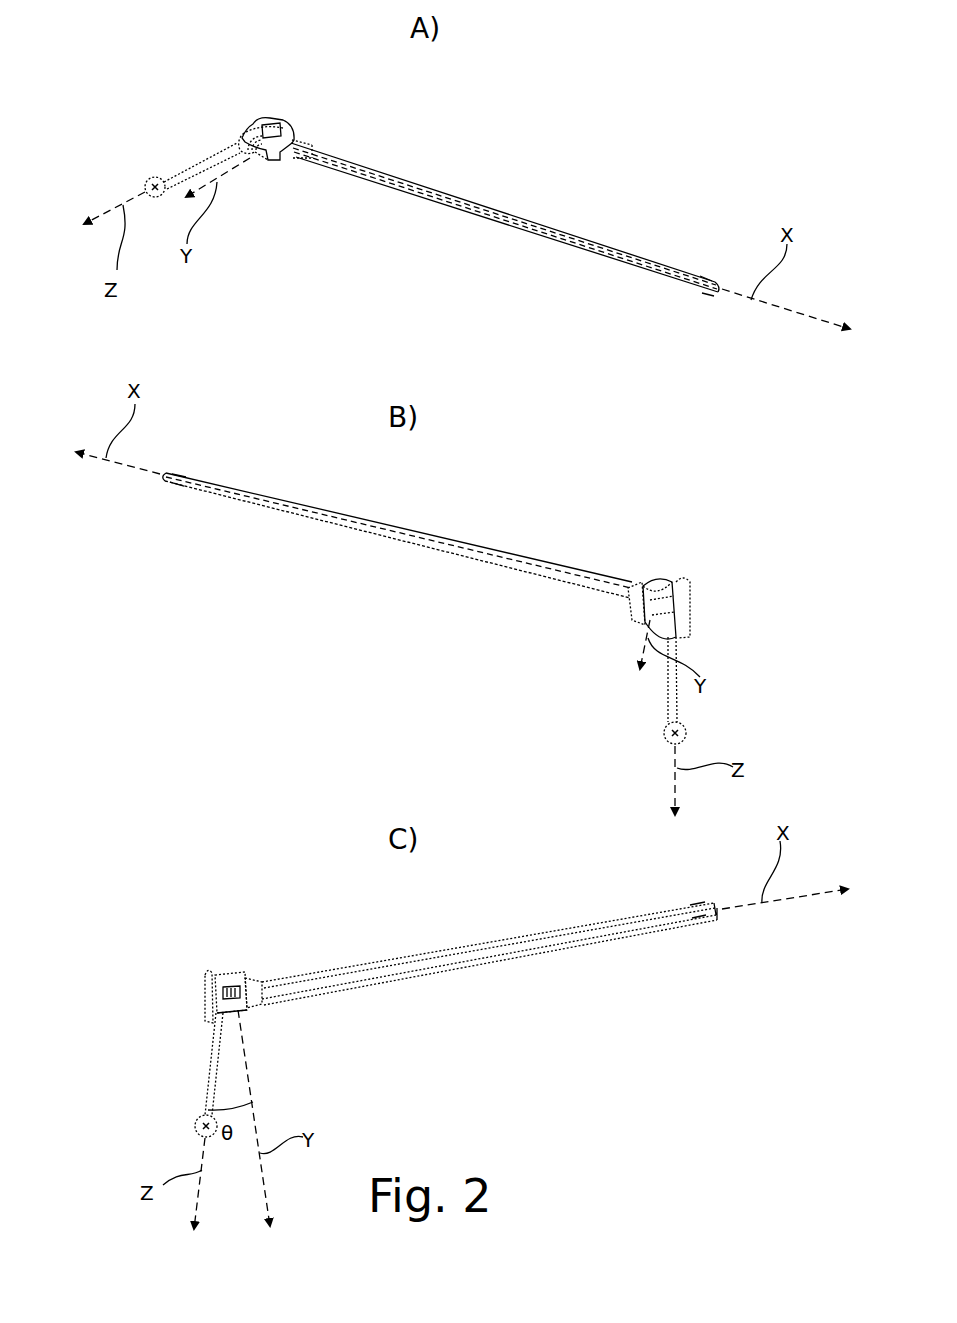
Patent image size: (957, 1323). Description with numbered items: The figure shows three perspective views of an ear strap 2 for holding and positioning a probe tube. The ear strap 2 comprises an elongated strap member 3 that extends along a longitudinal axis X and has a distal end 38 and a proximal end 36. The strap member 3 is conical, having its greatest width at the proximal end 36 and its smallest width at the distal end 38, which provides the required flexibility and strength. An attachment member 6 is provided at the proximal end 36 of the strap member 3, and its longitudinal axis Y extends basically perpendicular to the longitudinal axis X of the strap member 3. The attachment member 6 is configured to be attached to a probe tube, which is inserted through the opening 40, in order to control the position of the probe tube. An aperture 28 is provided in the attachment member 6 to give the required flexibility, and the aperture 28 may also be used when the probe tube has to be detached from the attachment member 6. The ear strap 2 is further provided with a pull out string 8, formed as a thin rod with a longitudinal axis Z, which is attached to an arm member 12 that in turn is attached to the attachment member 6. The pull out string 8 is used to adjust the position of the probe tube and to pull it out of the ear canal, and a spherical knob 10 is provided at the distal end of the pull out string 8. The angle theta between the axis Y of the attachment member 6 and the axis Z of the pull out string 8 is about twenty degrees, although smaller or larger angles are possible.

The ear strap 2 is at (264, 232).
The strap member 3 is at (533, 227).
The attachment member 6 is at (252, 112).
The pull out string 8 is at (205, 162).
The spherical knob 10 is at (160, 196).
The arm member 12 is at (238, 137).
The aperture 28 is at (265, 125).
The proximal end 36 is at (323, 143).
The distal end 38 is at (706, 266).
The opening 40 is at (257, 167).